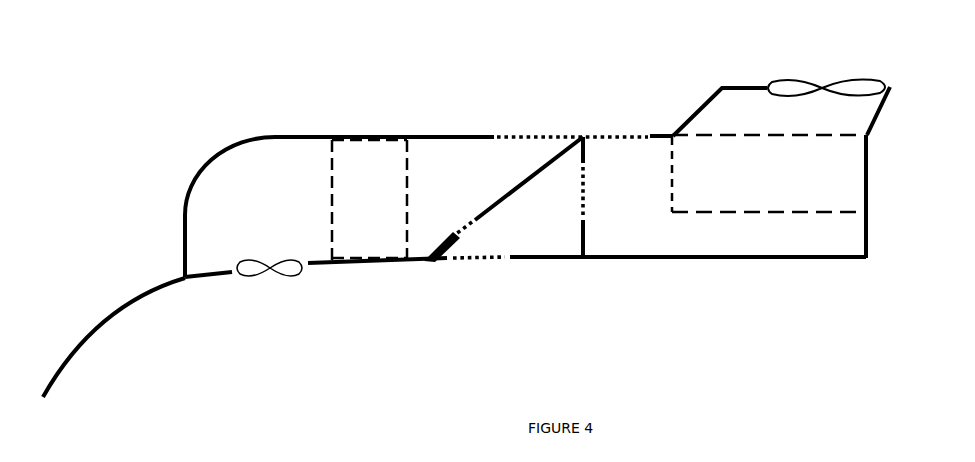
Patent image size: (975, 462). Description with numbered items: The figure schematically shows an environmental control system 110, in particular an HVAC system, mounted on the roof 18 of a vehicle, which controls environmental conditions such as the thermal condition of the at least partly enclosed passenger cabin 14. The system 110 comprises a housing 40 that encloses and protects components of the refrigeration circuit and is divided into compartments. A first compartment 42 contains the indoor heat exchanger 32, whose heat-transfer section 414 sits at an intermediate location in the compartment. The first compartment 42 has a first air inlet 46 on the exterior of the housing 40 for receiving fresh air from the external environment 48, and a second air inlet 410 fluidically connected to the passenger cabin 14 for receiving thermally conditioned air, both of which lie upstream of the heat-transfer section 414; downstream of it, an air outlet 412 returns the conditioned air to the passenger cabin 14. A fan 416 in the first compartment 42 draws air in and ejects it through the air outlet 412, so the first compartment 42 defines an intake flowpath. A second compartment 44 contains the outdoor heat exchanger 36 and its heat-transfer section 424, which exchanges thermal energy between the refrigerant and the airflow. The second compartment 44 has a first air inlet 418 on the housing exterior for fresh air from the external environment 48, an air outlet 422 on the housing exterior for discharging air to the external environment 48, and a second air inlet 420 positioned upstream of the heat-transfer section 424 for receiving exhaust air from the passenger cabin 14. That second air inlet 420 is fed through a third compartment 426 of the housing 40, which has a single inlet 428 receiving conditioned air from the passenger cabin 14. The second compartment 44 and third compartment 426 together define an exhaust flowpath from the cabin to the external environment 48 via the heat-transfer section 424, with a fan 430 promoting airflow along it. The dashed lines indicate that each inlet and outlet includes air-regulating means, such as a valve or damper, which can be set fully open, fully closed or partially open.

The environmental control system 110 is at (158, 153).
The roof 18 is at (82, 330).
The housing 40 is at (277, 137).
The indoor heat exchanger 32 is at (342, 143).
The external environment 48 is at (160, 213).
The first compartment 42 is at (264, 205).
The heat-transfer section 414 is at (353, 163).
The first air inlet 46 is at (522, 128).
The first air inlet 418 is at (627, 133).
The second air inlet 410 is at (452, 247).
The air outlet 412 is at (307, 277).
The fan 416 is at (240, 278).
The single inlet 428 is at (497, 264).
The third compartment 426 is at (551, 245).
The second air inlet 420 is at (590, 213).
The passenger cabin 14 is at (717, 313).
The second compartment 44 is at (744, 120).
The outdoor heat exchanger 36 is at (833, 165).
The heat-transfer section 424 is at (777, 185).
The air outlet 422 is at (766, 82).
The fan 430 is at (888, 86).